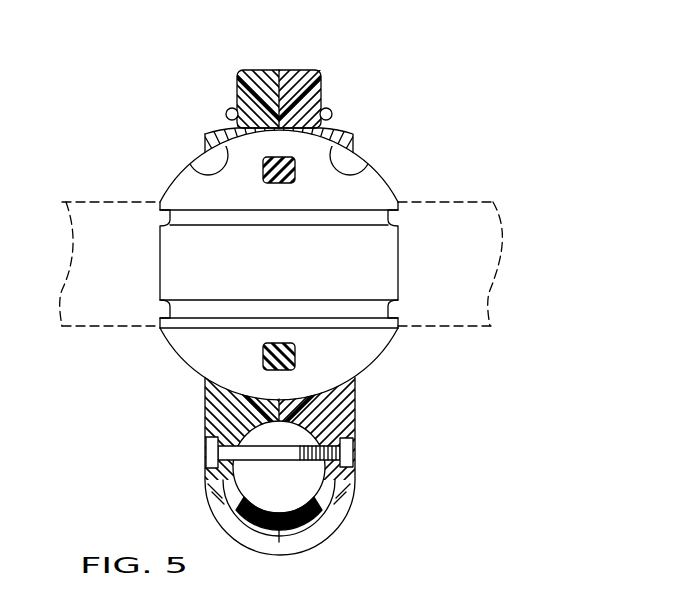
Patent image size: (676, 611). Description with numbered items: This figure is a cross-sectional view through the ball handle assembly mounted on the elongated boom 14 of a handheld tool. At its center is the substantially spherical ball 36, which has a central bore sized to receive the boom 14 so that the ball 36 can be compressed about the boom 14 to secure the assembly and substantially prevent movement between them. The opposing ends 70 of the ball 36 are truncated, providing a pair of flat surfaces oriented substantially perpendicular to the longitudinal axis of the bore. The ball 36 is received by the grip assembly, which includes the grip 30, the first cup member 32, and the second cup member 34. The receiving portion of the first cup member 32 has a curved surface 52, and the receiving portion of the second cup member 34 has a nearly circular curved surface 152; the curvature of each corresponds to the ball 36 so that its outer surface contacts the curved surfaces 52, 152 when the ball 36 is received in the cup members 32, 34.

The boom 14 is at (455, 312).
The grip 30 is at (318, 513).
The first cup member 32 is at (258, 82).
The second cup member 34 is at (297, 83).
The ball 36 is at (363, 186).
The curved surface 52 is at (190, 166).
The curved surface 152 is at (353, 163).
The opposing ends 70 is at (160, 271).